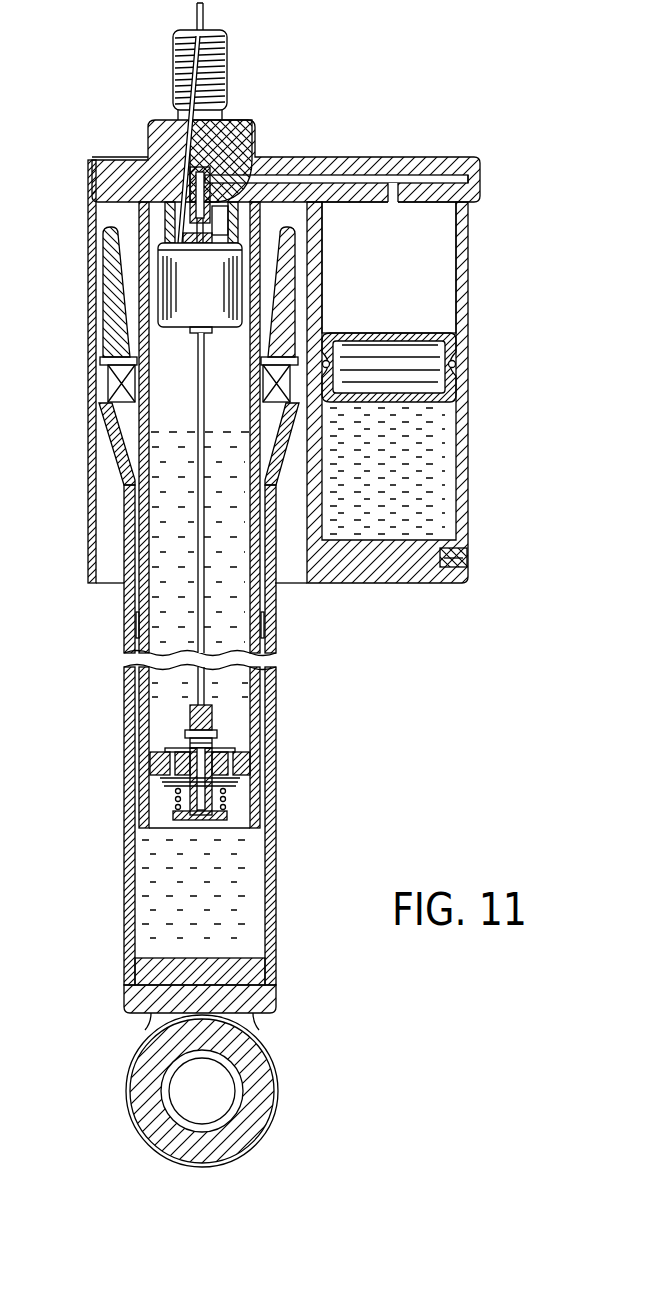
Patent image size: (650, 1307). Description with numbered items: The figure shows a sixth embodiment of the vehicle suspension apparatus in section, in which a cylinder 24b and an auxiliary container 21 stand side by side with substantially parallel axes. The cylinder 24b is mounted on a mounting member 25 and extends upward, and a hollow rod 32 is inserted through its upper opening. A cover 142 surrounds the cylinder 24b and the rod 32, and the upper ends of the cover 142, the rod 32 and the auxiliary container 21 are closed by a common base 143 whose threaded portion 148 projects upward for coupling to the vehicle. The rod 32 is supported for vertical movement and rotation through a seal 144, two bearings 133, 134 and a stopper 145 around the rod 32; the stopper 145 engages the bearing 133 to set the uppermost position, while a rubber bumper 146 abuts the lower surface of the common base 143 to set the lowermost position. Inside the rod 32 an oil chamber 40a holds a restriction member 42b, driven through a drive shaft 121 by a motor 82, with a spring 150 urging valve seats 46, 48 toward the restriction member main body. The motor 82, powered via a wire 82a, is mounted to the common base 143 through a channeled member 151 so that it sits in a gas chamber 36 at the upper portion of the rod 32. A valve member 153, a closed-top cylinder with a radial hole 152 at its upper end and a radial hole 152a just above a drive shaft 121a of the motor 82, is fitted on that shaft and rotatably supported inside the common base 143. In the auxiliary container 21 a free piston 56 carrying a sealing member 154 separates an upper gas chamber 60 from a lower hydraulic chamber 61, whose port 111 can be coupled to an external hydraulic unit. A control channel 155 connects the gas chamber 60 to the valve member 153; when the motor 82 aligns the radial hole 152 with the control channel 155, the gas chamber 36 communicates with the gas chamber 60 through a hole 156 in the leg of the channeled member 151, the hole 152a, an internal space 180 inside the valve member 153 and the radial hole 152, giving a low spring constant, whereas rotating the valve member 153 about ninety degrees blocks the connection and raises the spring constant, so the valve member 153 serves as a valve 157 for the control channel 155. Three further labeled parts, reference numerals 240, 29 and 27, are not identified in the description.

The wire 82a is at (197, 13).
The threaded portion 148 is at (173, 62).
The valve 157 is at (172, 187).
The valve member 153 is at (212, 137).
The radial hole 152 is at (210, 165).
The radial hole 152a is at (212, 178).
The common base 143 is at (297, 167).
The control channel 155 is at (352, 180).
The hole 156 is at (168, 212).
The drive shaft 121a is at (167, 235).
The motor 82 is at (168, 290).
The rubber bumper 146 is at (113, 318).
The channeled member 151 is at (238, 233).
The internal space 180 is at (226, 228).
The gas chamber 60 is at (447, 258).
The auxiliary container 21 is at (468, 338).
The sealing member 154 is at (456, 363).
The free piston 56 is at (442, 385).
The seal 144 is at (115, 387).
The drive shaft 121 is at (197, 371).
The gas chamber 36 is at (240, 383).
The tapered wall 240 is at (100, 425).
The cover 142 is at (88, 498).
The bearing 133 is at (133, 520).
The hydraulic chamber 61 is at (447, 497).
The port 111 is at (468, 560).
The upper chamber 29 is at (163, 585).
The stopper 145 is at (136, 625).
The outer tube 27 is at (276, 638).
The cylinder 24b is at (130, 697).
The hollow rod 32 is at (255, 682).
The oil chamber 40a is at (238, 708).
The restriction member 42b is at (219, 733).
The valve seat 46 is at (232, 748).
The bearing 134 is at (133, 757).
The valve seat 48 is at (228, 785).
The spring 150 is at (226, 808).
The mounting member 25 is at (142, 1083).